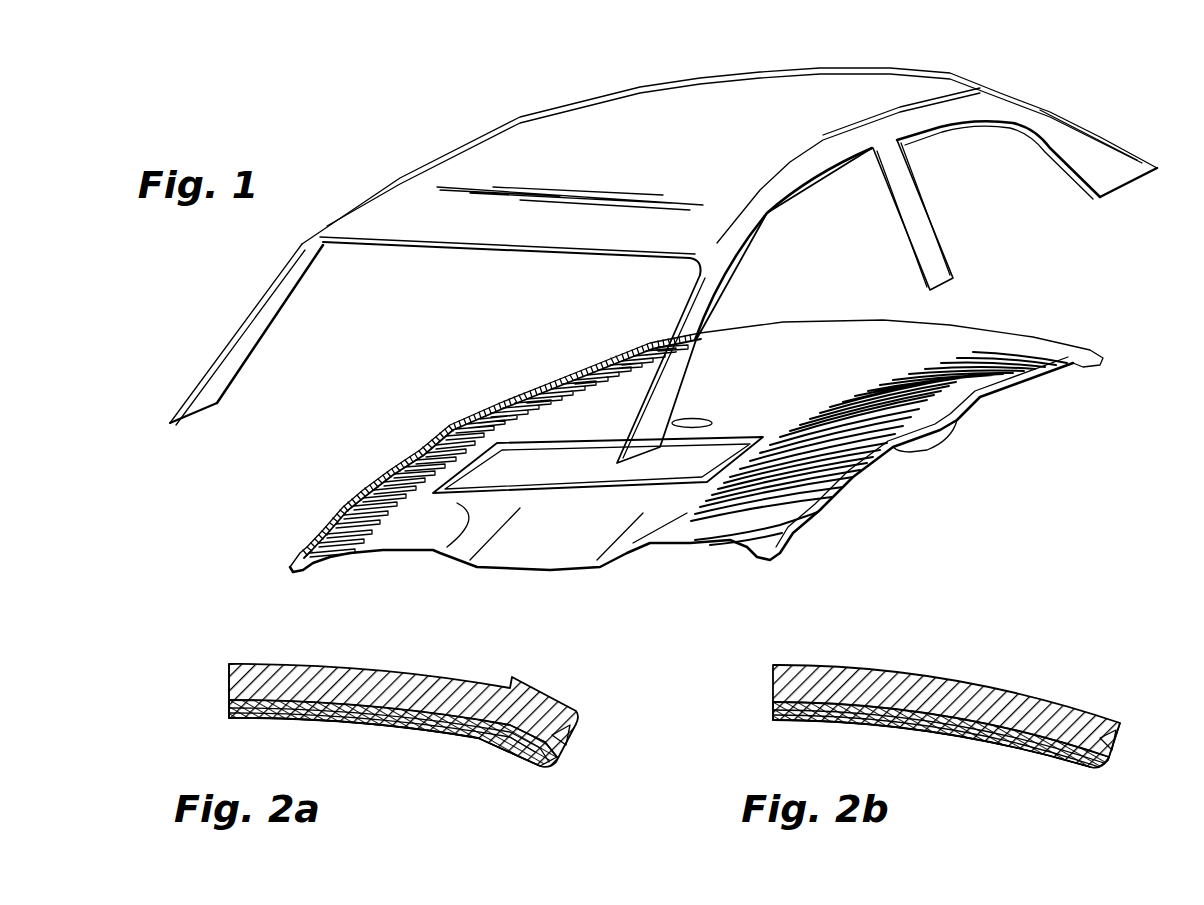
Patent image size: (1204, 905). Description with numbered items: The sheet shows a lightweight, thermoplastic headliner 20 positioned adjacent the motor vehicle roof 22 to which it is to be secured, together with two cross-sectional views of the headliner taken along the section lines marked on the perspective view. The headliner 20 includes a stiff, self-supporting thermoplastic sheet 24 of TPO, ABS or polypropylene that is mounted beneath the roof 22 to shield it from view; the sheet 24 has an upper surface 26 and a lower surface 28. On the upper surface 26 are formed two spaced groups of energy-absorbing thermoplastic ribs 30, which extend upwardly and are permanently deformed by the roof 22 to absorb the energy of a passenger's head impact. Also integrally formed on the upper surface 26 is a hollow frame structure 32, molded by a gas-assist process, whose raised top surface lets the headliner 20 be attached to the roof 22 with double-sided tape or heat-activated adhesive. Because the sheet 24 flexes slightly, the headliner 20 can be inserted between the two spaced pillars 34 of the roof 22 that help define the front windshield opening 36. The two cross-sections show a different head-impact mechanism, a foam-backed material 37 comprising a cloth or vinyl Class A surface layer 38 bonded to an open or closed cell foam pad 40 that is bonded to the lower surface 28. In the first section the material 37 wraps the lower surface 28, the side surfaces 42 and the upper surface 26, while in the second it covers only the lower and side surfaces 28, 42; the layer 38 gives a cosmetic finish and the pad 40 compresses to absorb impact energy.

In FIG. 1, the headliner 20 is at (1022, 305).
In FIG. 1, the roof 22 is at (636, 88).
In FIG. 1, the thermoplastic sheet 24 is at (816, 312).
In FIG. 2A, the thermoplastic sheet 24 is at (277, 645).
In FIG. 2B, the thermoplastic sheet 24 is at (960, 652).
In FIG. 1, the upper surface 26 is at (397, 537).
In FIG. 2A, the upper surface 26 is at (365, 675).
In FIG. 2B, the upper surface 26 is at (817, 690).
In FIG. 1, the lower surface 28 is at (417, 557).
In FIG. 2A, the lower surface 28 is at (417, 723).
In FIG. 2B, the lower surface 28 is at (880, 723).
In FIG. 1, the thermoplastic ribs 30 is at (434, 429).
In FIG. 1, the hollow frame structure 32 is at (745, 433).
In FIG. 1, the pillars 34 is at (247, 350).
In FIG. 1, the front windshield opening 36 is at (430, 250).
In FIG. 2A, the foam-backed material 37 is at (278, 735).
In FIG. 2B, the foam-backed material 37 is at (1100, 787).
In FIG. 2A, the surface layer 38 is at (453, 737).
In FIG. 2B, the surface layer 38 is at (997, 733).
In FIG. 2A, the foam pad 40 is at (510, 750).
In FIG. 2B, the foam pad 40 is at (1047, 753).
In FIG. 2A, the side surfaces 42 is at (570, 740).
In FIG. 2B, the side surfaces 42 is at (1117, 733).